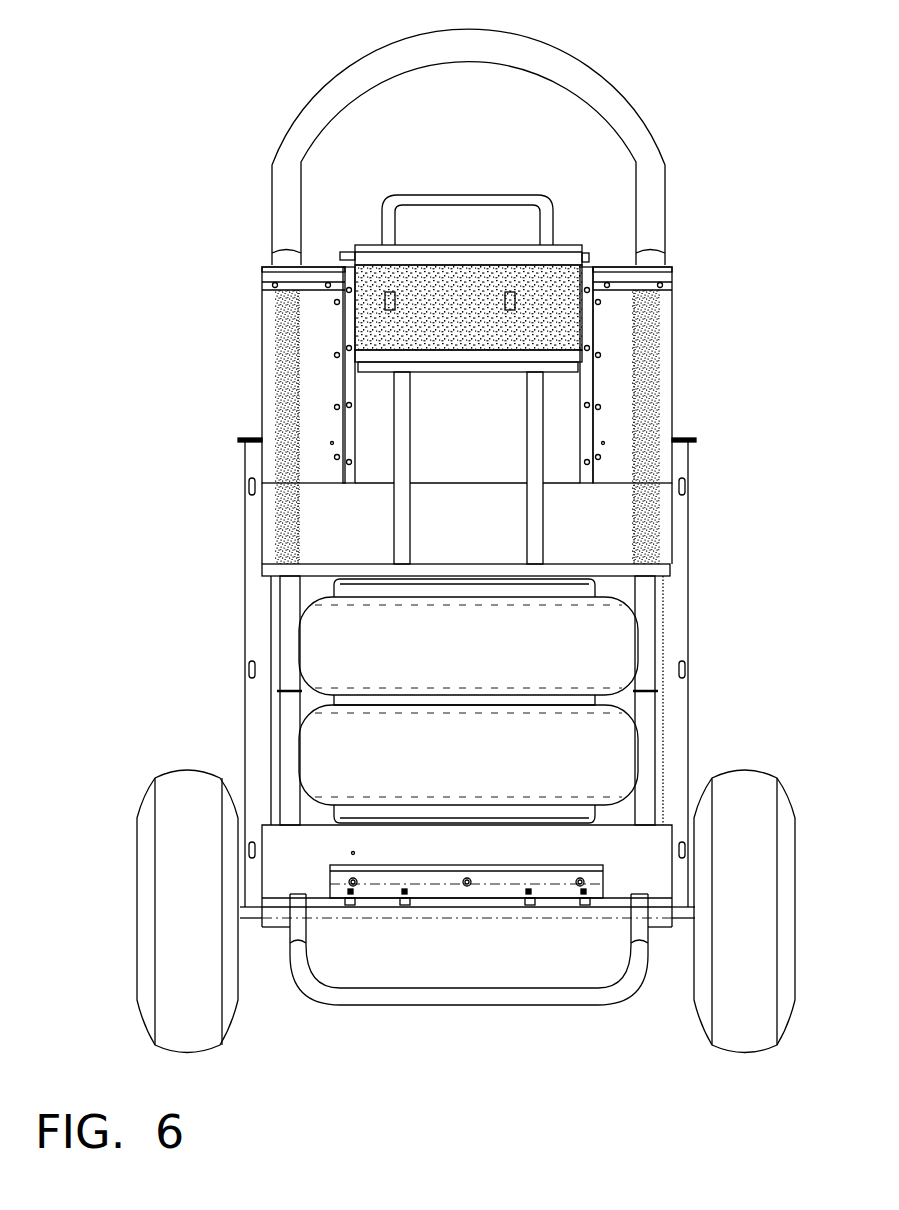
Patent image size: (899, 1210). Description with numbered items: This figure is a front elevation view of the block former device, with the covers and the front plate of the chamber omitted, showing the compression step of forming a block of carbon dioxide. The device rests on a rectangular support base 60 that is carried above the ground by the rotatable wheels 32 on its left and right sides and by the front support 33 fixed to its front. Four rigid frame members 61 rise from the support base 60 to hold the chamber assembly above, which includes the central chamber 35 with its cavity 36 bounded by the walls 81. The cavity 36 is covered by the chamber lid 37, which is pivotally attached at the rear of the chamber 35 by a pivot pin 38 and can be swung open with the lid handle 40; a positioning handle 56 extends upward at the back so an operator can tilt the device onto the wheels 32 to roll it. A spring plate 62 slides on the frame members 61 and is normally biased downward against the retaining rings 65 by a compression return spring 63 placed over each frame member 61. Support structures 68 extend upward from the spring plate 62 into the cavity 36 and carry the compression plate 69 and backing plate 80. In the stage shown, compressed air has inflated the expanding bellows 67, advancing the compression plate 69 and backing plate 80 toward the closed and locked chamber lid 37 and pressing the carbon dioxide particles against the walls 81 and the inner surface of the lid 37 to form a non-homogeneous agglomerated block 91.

The wheels 32 is at (145, 793).
The front support 33 is at (405, 1005).
The central chamber 35 is at (555, 440).
The cavity 36 is at (358, 325).
The chamber lid 37 is at (565, 245).
The pivot pin 38 is at (586, 262).
The lid handle 40 is at (470, 195).
The positioning handle 56 is at (572, 53).
The support base 60 is at (278, 890).
The frame members 61 is at (288, 722).
The spring plate 62 is at (672, 580).
The compression return spring 63 is at (660, 320).
The retaining ring 65 is at (290, 690).
The expanding bellows 67 is at (477, 652).
The support structures 68 is at (527, 512).
The compression plate 69 is at (422, 357).
The backing plate 80 is at (577, 368).
The walls 81 is at (380, 398).
The agglomerated block 91 is at (560, 318).